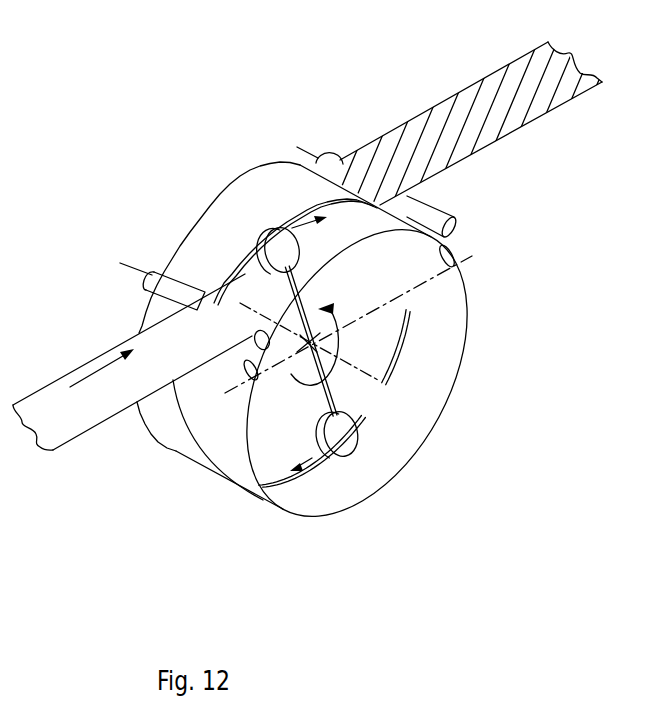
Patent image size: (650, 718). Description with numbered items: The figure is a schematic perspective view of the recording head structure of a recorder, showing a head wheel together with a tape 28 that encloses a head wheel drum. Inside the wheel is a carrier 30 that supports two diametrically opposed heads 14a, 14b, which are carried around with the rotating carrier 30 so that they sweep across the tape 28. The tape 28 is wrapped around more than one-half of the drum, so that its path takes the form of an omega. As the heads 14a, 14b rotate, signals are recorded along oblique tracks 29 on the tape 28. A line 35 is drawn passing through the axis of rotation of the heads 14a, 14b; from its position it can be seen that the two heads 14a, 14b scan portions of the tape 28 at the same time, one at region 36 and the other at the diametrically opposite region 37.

The head 14a is at (339, 447).
The head 14b is at (276, 228).
The tape 28 is at (100, 387).
The oblique tracks 29 is at (510, 82).
The carrier 30 is at (332, 390).
The line 35 is at (398, 296).
The region 36 is at (436, 258).
The region 37 is at (243, 367).